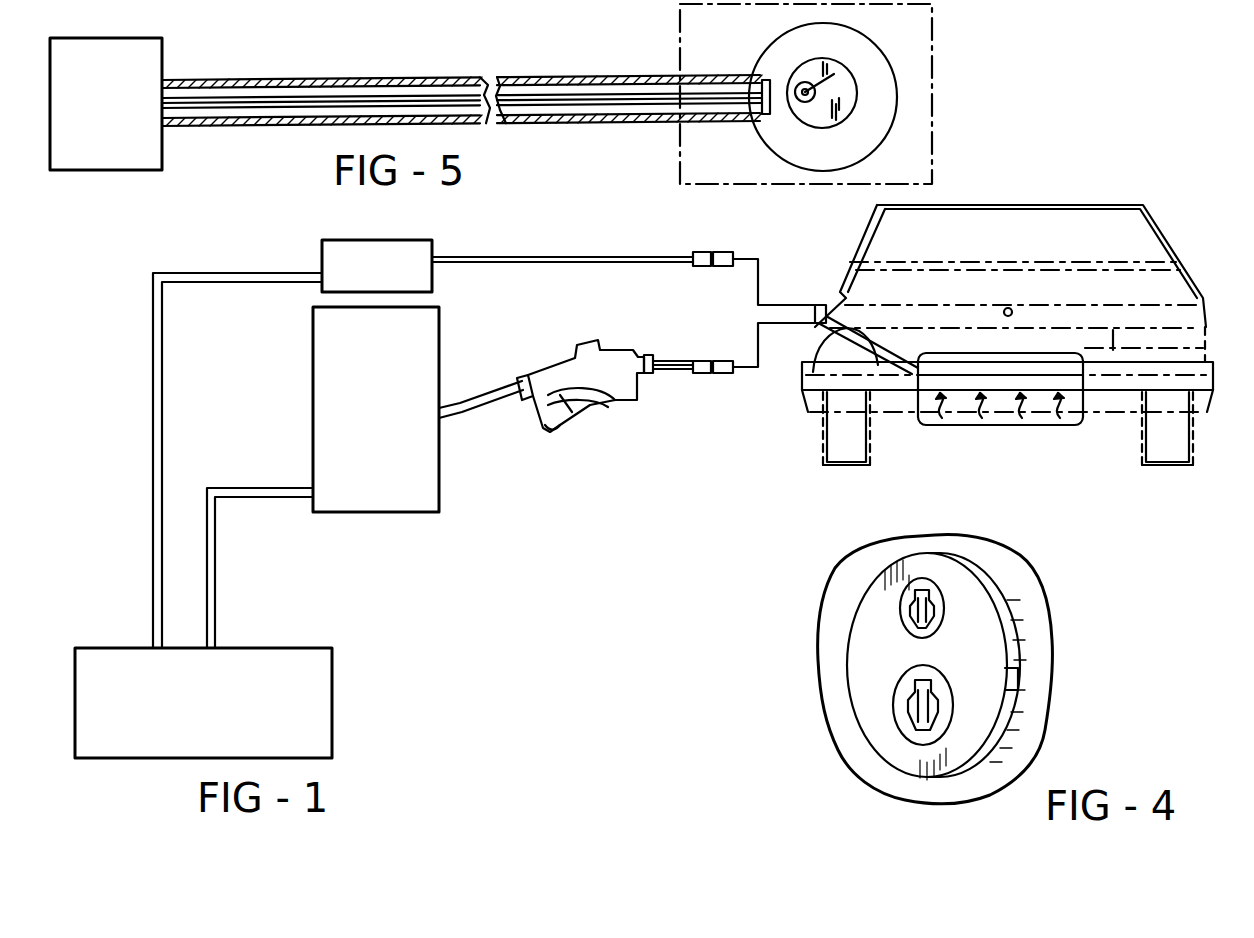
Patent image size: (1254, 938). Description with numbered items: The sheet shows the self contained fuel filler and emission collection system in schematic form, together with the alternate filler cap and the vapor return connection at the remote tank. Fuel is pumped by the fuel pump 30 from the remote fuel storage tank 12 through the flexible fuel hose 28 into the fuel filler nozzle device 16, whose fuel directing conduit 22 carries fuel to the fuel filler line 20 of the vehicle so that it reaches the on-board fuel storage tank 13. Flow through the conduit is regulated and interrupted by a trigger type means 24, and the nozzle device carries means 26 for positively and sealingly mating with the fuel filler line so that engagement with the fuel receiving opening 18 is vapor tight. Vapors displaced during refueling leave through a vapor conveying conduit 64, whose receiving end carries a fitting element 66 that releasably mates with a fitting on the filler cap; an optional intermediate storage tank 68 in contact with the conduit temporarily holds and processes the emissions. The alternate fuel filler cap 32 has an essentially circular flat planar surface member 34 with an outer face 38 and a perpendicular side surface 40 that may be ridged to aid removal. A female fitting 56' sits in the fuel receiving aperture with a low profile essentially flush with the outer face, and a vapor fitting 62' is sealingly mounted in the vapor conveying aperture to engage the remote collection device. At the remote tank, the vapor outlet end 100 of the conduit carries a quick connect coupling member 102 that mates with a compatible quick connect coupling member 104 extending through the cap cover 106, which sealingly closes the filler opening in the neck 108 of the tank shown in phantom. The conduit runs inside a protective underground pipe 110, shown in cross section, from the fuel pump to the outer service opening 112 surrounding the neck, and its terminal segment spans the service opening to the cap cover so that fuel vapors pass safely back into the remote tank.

In FIG. 5, the remote fuel storage tank 12 is at (930, 22).
In FIG. 1, the remote fuel storage tank 12 is at (332, 690).
In FIG. 1, the on-board fuel storage tank 13 is at (1000, 425).
In FIG. 1, the fuel filler nozzle device 16 is at (600, 415).
In FIG. 1, the fuel receiving opening 18 is at (818, 308).
In FIG. 1, the fuel filler line 20 is at (878, 365).
In FIG. 1, the fuel directing conduit 22 is at (660, 352).
In FIG. 1, the regulating and interrupting means 24 is at (568, 432).
In FIG. 1, the sealing mating means 26 is at (707, 374).
In FIG. 1, the flexible fuel hose 28 is at (475, 393).
In FIG. 5, the fuel pump 30 is at (162, 48).
In FIG. 1, the fuel pump 30 is at (365, 512).
In FIG. 4, the fuel filler cap 32 is at (1020, 723).
In FIG. 4, the flat planar surface member 34 is at (985, 678).
In FIG. 4, the outer face 38 is at (992, 637).
In FIG. 4, the side surface 40 is at (1018, 683).
In FIG. 4, the female fitting 56' is at (855, 705).
In FIG. 4, the vapor fitting 62' is at (999, 608).
In FIG. 5, the vapor conveying conduit 64 is at (285, 92).
In FIG. 1, the vapor conveying conduit 64 is at (455, 264).
In FIG. 1, the fitting element 66 is at (703, 268).
In FIG. 1, the intermediate storage tank 68 is at (322, 283).
In FIG. 5, the vapor outlet end 100 is at (750, 68).
In FIG. 5, the quick connect coupling member 102 is at (758, 125).
In FIG. 5, the compatible quick connect coupling member 104 is at (862, 68).
In FIG. 5, the cap cover 106 is at (845, 118).
In FIG. 5, the neck 108 is at (850, 108).
In FIG. 5, the underground pipe 110 is at (250, 128).
In FIG. 5, the outer service opening 112 is at (890, 97).